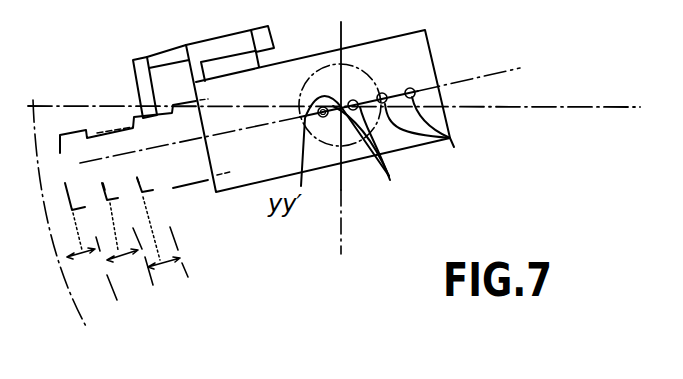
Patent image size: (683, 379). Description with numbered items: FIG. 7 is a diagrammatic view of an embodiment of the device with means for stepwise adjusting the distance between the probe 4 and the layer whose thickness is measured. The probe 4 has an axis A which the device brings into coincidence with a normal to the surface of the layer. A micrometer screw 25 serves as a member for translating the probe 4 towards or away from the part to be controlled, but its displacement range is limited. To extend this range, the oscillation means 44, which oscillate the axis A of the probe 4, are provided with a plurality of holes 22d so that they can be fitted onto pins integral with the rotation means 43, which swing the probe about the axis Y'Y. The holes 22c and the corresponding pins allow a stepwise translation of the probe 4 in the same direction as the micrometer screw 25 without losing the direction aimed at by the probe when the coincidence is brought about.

The probe 4 is at (182, 205).
The micrometer screw 25 is at (214, 44).
The rotation means 43 is at (381, 94).
The oscillation means 44 is at (460, 34).
The holes 22c is at (428, 142).
The holes 22d is at (359, 153).
The axis of the probe A is at (311, 109).